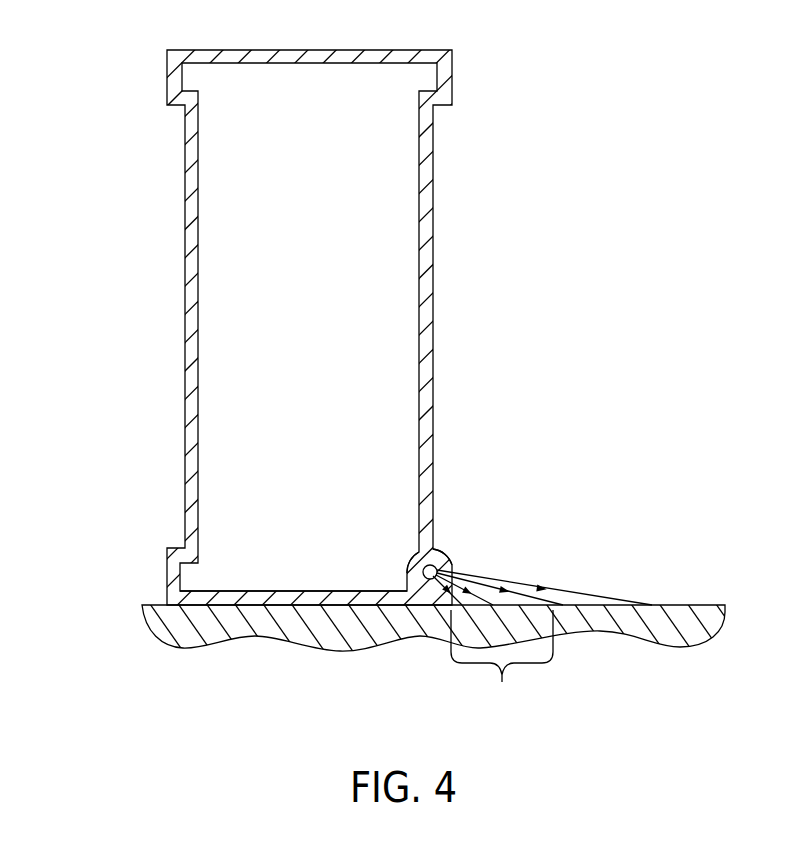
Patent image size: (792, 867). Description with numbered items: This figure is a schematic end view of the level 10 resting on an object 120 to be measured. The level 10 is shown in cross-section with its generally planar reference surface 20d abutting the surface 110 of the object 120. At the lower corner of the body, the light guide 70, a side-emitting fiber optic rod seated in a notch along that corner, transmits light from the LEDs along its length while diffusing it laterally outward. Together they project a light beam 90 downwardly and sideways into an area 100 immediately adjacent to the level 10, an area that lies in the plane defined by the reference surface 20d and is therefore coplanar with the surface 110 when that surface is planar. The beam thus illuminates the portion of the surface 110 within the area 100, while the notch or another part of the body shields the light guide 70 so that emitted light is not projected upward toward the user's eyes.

The level 10 is at (467, 158).
The reference surface 20d is at (265, 610).
The light guide 70 is at (436, 567).
The light beam 90 is at (505, 577).
The area 100 is at (502, 664).
The surface 110 is at (698, 595).
The object 120 is at (672, 605).